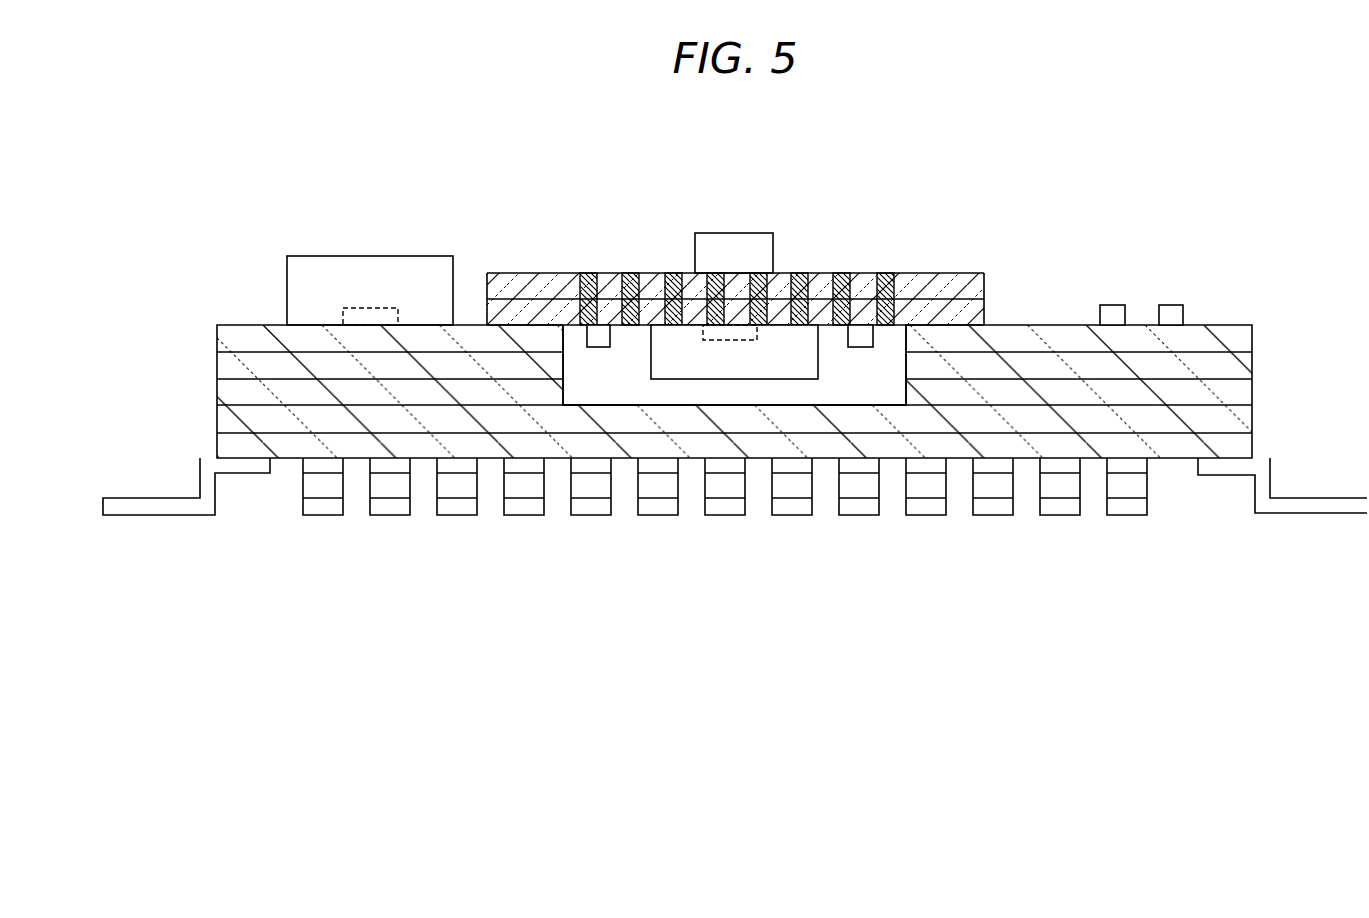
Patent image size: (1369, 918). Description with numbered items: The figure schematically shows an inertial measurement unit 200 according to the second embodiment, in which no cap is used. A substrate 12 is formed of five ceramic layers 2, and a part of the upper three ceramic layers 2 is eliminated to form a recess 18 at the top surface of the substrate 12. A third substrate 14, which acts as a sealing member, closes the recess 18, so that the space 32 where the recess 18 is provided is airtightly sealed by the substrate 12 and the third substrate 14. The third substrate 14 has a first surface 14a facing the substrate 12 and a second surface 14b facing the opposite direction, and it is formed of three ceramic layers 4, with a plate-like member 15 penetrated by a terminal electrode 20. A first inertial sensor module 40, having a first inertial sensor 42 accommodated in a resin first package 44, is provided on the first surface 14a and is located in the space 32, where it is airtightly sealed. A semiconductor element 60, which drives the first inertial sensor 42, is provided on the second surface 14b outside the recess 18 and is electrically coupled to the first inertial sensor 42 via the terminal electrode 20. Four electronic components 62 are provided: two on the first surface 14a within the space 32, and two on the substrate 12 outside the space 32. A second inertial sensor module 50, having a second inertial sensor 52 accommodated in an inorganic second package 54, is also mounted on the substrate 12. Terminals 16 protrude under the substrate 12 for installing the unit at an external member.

The inertial measurement unit 200 is at (1303, 196).
The substrate 12 is at (170, 320).
The ceramic layer 2 is at (250, 337).
The third substrate 14 is at (492, 244).
The first surface 14a is at (963, 333).
The second surface 14b is at (962, 273).
The plate-like member 15 is at (572, 192).
The ceramic layer 4 is at (505, 315).
The terminal 16 is at (205, 490).
The recess 18 is at (578, 392).
The terminal electrode 20 is at (672, 272).
The space 32 is at (632, 380).
The first inertial sensor module 40 is at (855, 197).
The first inertial sensor 42 is at (760, 332).
The first package 44 is at (783, 347).
The second inertial sensor module 50 is at (432, 212).
The second inertial sensor 52 is at (362, 308).
The second package 54 is at (420, 293).
The semiconductor element 60 is at (735, 248).
The electronic component 62 is at (600, 338).